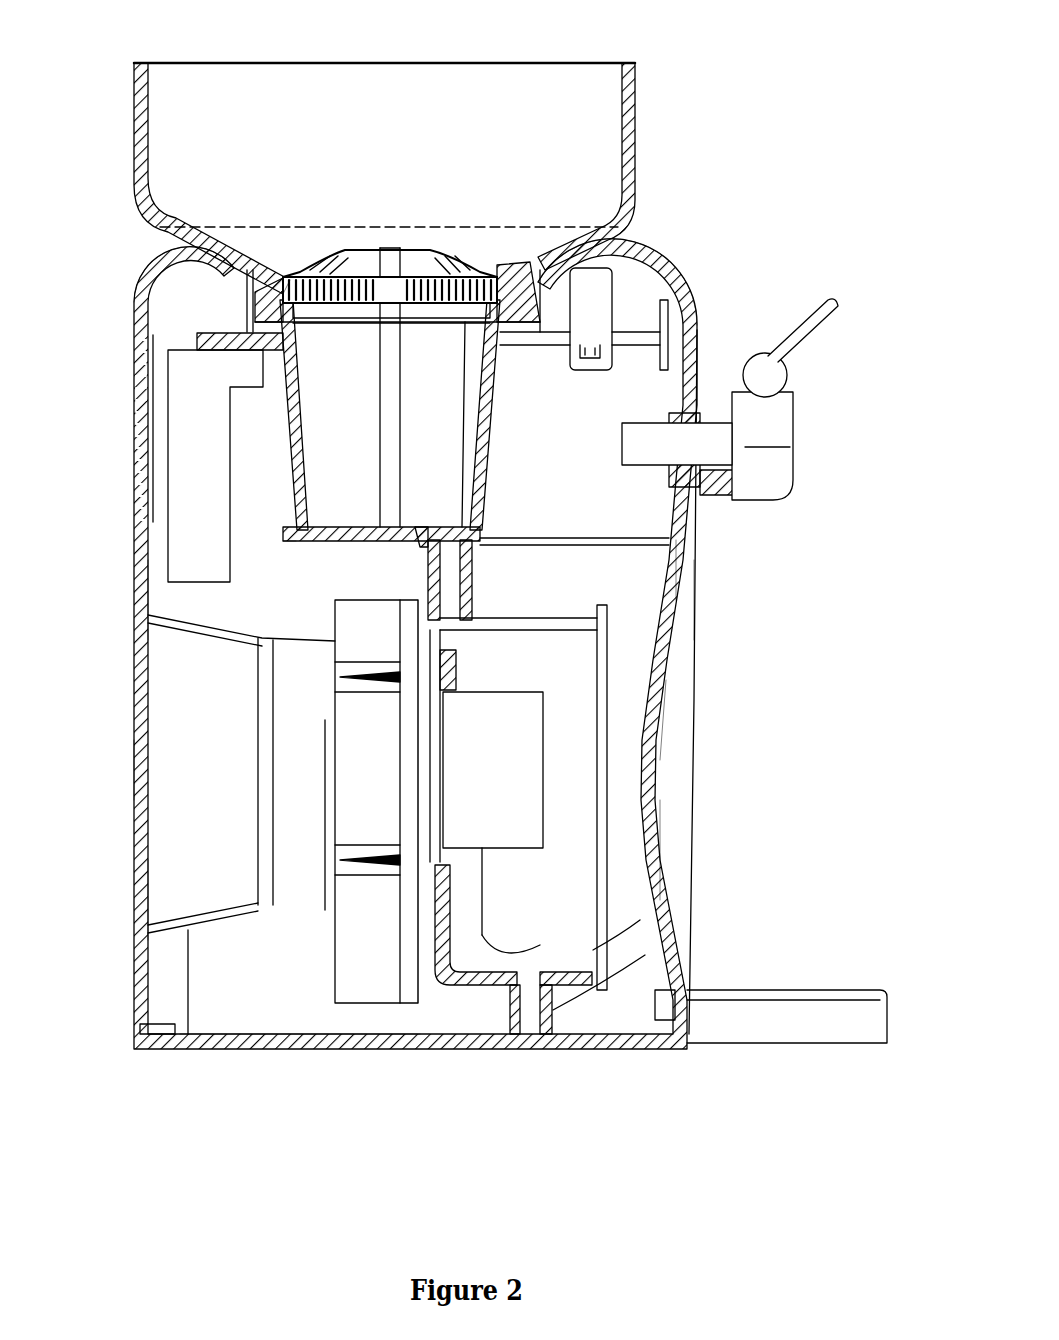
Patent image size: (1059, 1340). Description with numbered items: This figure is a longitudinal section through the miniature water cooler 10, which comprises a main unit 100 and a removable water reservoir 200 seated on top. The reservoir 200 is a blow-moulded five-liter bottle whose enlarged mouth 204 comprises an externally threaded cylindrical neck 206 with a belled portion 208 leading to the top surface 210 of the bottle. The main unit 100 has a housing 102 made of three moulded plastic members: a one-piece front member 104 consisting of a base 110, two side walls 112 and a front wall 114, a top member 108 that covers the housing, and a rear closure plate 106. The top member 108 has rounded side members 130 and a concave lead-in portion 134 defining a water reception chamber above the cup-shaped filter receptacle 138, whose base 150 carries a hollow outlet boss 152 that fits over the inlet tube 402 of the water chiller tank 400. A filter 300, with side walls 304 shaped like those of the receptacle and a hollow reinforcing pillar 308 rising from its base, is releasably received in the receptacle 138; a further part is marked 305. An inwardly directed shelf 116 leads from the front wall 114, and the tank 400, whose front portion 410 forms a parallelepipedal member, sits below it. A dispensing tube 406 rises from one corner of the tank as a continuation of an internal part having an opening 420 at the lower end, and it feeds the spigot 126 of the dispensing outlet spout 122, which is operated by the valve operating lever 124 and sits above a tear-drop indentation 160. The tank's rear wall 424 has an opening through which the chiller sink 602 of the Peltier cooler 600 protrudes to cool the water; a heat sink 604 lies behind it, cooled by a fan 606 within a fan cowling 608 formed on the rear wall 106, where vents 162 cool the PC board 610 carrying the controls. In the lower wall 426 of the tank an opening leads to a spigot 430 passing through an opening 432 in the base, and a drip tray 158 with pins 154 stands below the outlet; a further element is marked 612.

The miniature water cooler 10 is at (124, 765).
The main unit 100 is at (165, 992).
The housing 102 is at (229, 1012).
The front member 104 is at (680, 858).
The rear closure plate 106 is at (140, 594).
The top member 108 is at (690, 282).
The base 110 is at (253, 1052).
The side walls 112 is at (322, 950).
The front wall 114 is at (700, 604).
The shelf 116 is at (684, 558).
The dispensing outlet spout 122 is at (700, 374).
The valve operating lever 124 is at (768, 358).
The spigot 126 is at (622, 418).
The side members 130 is at (150, 236).
The lead-in portion 134 is at (240, 262).
The filter receptacle 138 is at (285, 543).
The base 150 is at (350, 543).
The outlet boss 152 is at (482, 530).
The pins 154 is at (667, 1050).
The drip tray 158 is at (820, 990).
The indentation 160 is at (668, 698).
The vents 162 is at (148, 470).
The water reservoir 200 is at (447, 151).
The mouth 204 is at (265, 292).
The neck 206 is at (560, 255).
The belled portion 208 is at (595, 268).
The top surface 210 is at (200, 226).
The filter 300 is at (368, 389).
The side walls 304 is at (296, 459).
The chamber rib 305 is at (445, 424).
The reinforcing pillar 308 is at (402, 378).
The water chiller tank 400 is at (614, 847).
The inlet tube 402 is at (472, 589).
The dispensing tube 406 is at (474, 679).
The front portion 410 is at (608, 825).
The opening 420 is at (520, 952).
The rear wall 424 is at (472, 1047).
The lower wall 426 is at (600, 938).
The spigot 430 is at (645, 955).
The opening 432 is at (542, 1048).
The Peltier cooler 600 is at (377, 874).
The chiller sink 602 is at (532, 840).
The heat sink 604 is at (390, 985).
The fan 606 is at (293, 810).
The fan cowling 608 is at (231, 922).
The PC board 610 is at (190, 527).
The side panel 612 is at (133, 882).